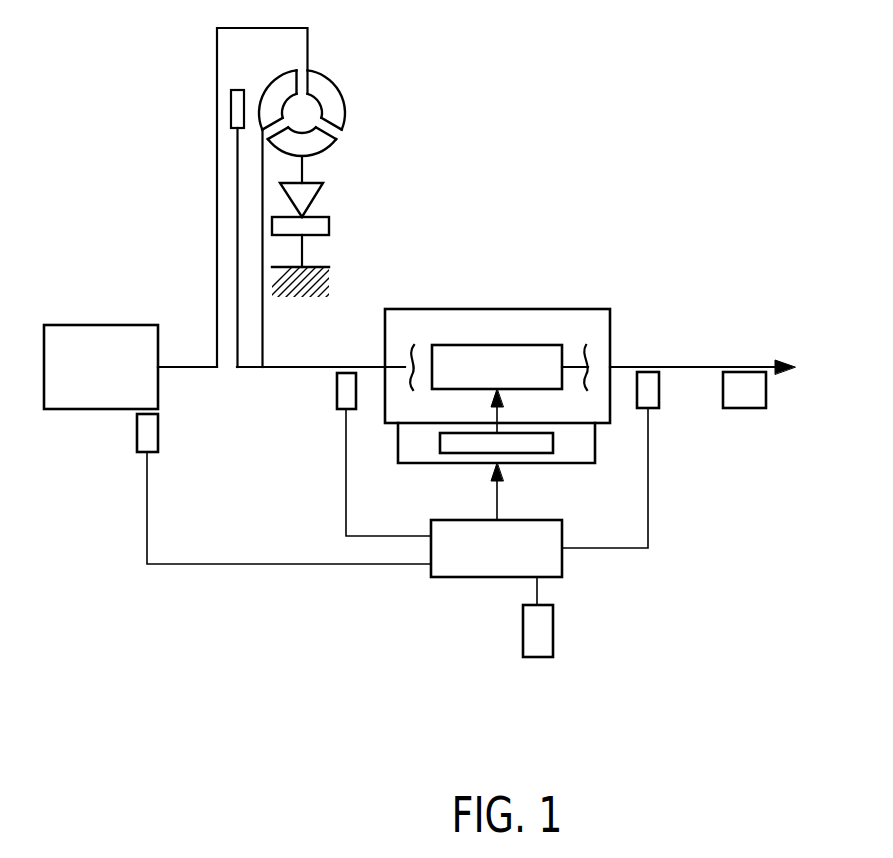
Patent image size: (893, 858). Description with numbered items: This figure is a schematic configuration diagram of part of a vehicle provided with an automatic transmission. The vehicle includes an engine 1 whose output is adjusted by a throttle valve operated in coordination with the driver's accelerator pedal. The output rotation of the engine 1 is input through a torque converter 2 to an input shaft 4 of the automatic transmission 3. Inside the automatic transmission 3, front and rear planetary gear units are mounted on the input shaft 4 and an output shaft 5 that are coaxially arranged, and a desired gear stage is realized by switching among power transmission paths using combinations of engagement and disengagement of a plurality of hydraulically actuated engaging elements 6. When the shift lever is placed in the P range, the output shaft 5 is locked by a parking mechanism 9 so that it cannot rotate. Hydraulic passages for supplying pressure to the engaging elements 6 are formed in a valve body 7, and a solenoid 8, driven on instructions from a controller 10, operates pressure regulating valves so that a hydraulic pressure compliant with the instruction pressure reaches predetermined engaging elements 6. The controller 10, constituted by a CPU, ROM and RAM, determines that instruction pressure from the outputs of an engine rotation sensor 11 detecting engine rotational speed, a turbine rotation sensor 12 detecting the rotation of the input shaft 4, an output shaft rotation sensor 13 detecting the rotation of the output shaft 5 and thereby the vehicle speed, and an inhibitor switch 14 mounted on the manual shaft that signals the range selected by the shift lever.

The engine 1 is at (67, 337).
The torque converter 2 is at (350, 68).
The automatic transmission 3 is at (461, 320).
The input shaft 4 is at (367, 365).
The output shaft 5 is at (678, 365).
The engaging elements 6 is at (518, 357).
The valve body 7 is at (412, 453).
The solenoid 8 is at (535, 443).
The parking mechanism 9 is at (758, 402).
The controller 10 is at (450, 577).
The engine rotation sensor 11 is at (153, 442).
The turbine rotation sensor 12 is at (342, 393).
The output shaft rotation sensor 13 is at (650, 395).
The inhibitor switch 14 is at (543, 642).